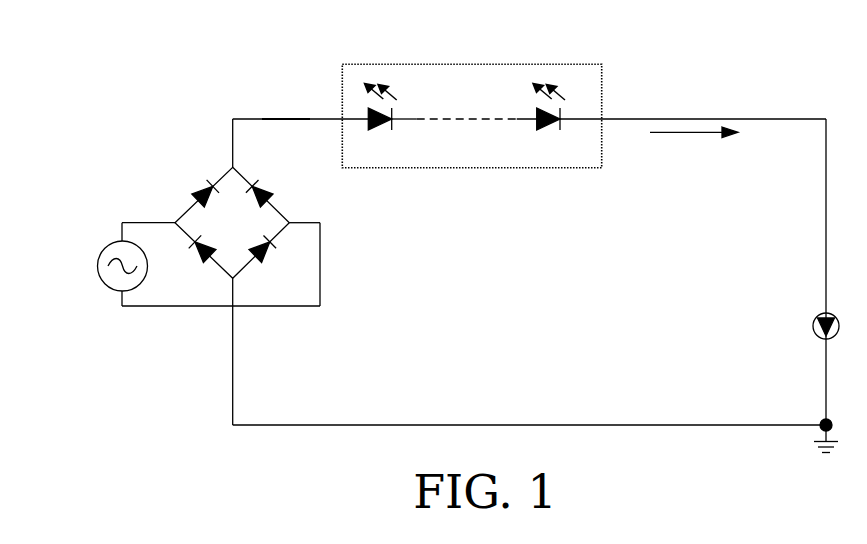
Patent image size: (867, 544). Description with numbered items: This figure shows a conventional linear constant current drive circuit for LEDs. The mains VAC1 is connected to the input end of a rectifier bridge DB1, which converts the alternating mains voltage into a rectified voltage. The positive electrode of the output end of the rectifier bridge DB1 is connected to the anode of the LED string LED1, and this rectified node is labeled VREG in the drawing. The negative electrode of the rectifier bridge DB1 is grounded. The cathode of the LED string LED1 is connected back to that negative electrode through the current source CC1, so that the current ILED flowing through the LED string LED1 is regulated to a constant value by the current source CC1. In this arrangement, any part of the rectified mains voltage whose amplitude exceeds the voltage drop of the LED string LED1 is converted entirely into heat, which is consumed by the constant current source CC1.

The LED string LED1 is at (471, 103).
The regulated voltage node VREG is at (286, 107).
The LED current ILED is at (694, 141).
The rectifier bridge DB1 is at (239, 235).
The mains VAC1 is at (165, 282).
The current source CC1 is at (799, 326).